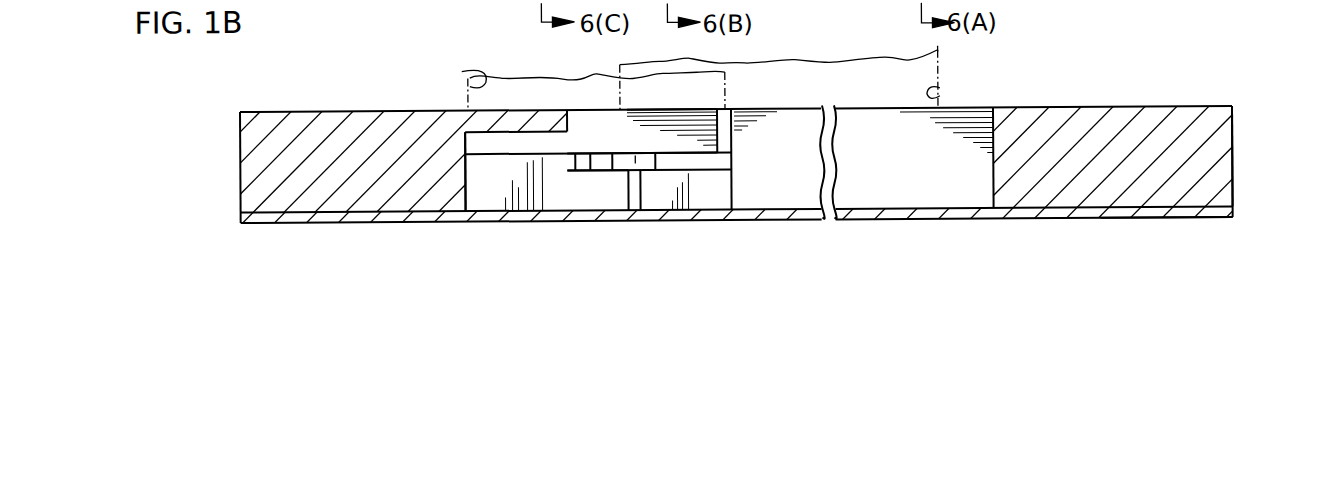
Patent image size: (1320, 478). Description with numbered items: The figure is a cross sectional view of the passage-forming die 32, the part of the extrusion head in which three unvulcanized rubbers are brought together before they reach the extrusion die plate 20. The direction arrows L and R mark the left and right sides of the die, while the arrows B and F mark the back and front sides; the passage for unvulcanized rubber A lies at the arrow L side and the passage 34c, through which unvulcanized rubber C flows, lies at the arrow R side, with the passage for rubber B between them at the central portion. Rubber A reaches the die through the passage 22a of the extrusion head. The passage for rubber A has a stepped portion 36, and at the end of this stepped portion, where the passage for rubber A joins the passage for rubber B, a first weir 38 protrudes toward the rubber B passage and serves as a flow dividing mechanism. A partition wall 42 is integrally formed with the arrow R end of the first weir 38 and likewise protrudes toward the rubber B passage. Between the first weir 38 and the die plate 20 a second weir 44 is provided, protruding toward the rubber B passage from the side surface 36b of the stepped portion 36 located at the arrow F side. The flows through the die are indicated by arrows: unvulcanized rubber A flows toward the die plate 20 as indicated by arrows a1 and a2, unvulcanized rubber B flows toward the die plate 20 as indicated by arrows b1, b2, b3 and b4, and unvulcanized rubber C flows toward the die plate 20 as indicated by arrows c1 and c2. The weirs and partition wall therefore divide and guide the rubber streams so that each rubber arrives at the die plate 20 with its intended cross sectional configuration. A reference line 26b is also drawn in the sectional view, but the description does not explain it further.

The extrusion die plate 20 is at (1146, 224).
The passage 22a is at (463, 74).
The second reference line 26b is at (948, 96).
The passage-forming die 32 is at (1238, 106).
The passage 34c is at (1113, 22).
The stepped portion 36 is at (500, 157).
The side surface of the stepped portion 36b is at (594, 200).
The first weir 38 is at (662, 175).
The partition wall 42 is at (729, 130).
The second weir 44 is at (629, 189).
The arrow indicating flow of unvulcanized rubber A a1 is at (548, 80).
The arrow indicating flow of unvulcanized rubber A a2 is at (697, 100).
The arrow indicating flow of unvulcanized rubber B b1 is at (683, 82).
The arrow indicating flow of unvulcanized rubber B b2 is at (712, 208).
The arrow indicating flow of unvulcanized rubber B b3 is at (802, 100).
The arrow indicating flow of unvulcanized rubber B b4 is at (877, 101).
The arrow indicating flow of unvulcanized rubber C c1 is at (905, 157).
The arrow indicating flow of unvulcanized rubber C c2 is at (967, 158).
The arrow L is at (262, 20).
The arrow R is at (413, 22).
The back direction B is at (197, 125).
The arrow F is at (197, 180).